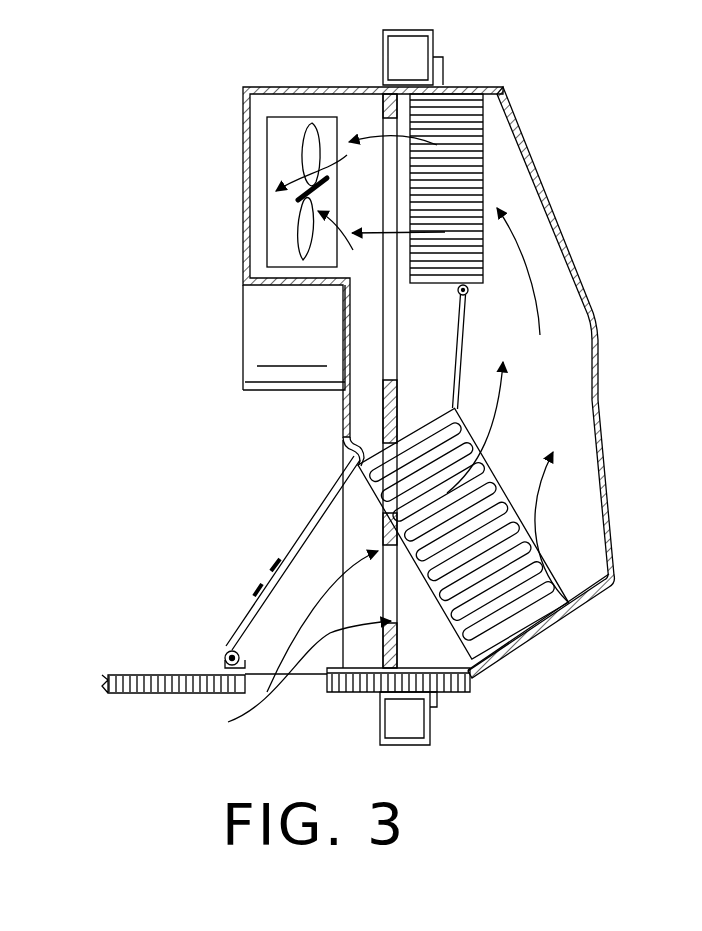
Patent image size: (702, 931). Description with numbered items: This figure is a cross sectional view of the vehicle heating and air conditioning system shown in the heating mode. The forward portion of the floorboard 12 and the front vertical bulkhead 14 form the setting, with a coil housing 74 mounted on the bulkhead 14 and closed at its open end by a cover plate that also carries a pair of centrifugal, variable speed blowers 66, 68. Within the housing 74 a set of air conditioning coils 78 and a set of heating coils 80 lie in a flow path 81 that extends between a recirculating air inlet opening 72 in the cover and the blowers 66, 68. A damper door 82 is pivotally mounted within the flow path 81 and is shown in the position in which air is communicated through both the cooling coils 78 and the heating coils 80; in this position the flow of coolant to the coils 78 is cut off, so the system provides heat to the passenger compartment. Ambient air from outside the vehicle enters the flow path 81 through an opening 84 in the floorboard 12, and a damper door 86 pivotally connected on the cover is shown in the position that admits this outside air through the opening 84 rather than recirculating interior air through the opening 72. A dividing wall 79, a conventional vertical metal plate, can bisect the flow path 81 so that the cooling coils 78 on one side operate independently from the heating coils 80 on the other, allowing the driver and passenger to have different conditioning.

The floorboard 12 is at (157, 695).
The front vertical bulkhead 14 is at (367, 665).
The blower 66 is at (267, 117).
The blower 68 is at (260, 318).
The recirculating air inlet opening 72 is at (242, 607).
The coil housing 74 is at (597, 373).
The air conditioning coils 78 is at (567, 603).
The dividing wall 79 is at (562, 343).
The heating coils 80 is at (455, 115).
The flow path 81 is at (560, 432).
The damper door 82 is at (463, 337).
The opening 84 is at (317, 682).
The damper door 86 is at (255, 590).